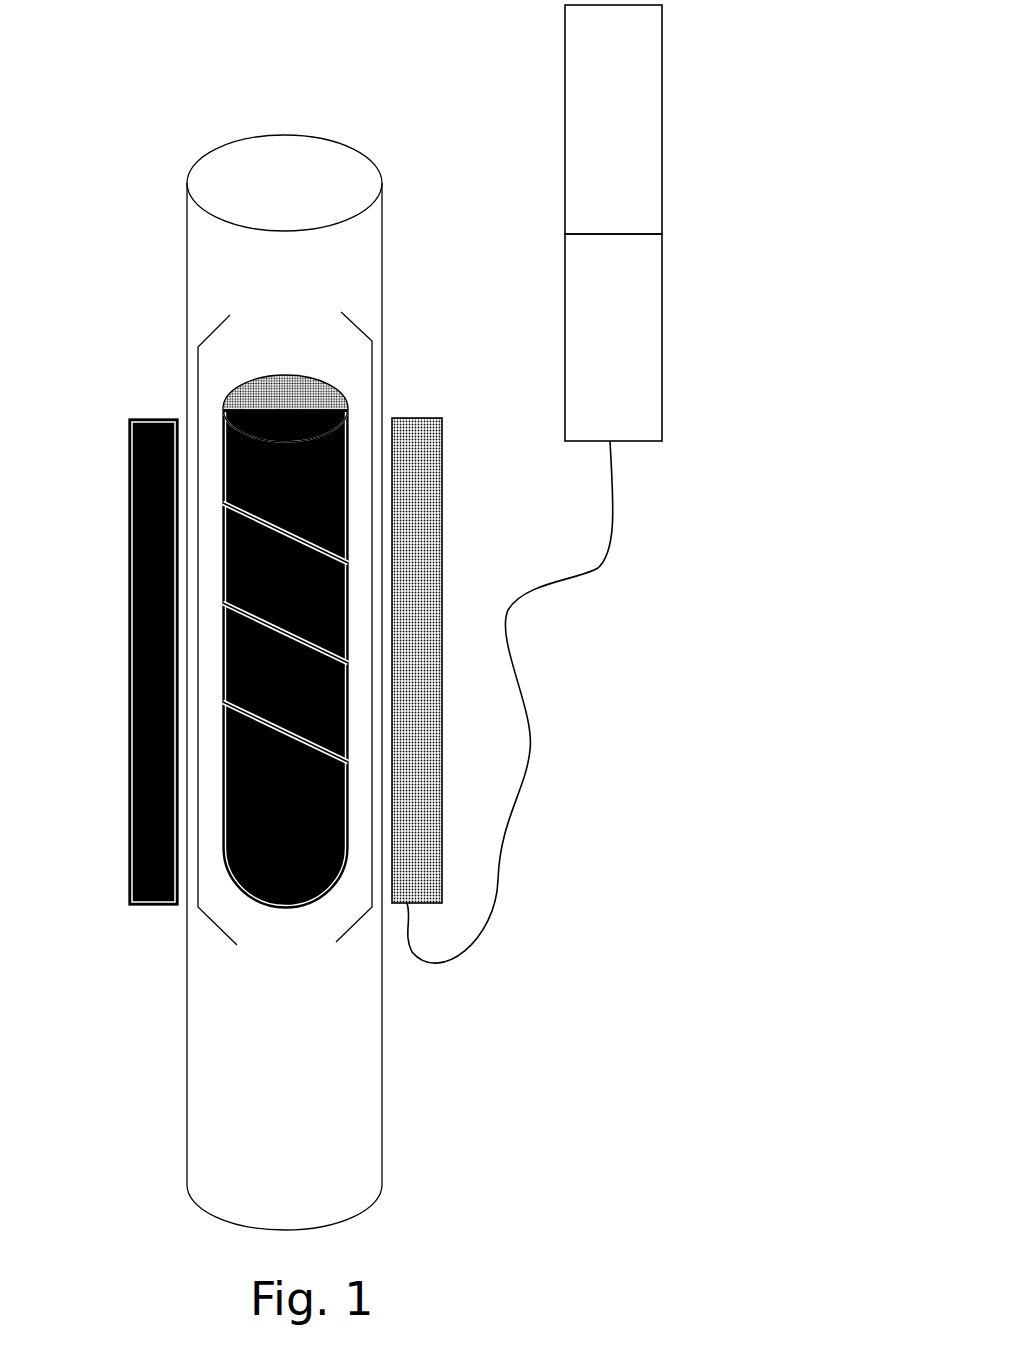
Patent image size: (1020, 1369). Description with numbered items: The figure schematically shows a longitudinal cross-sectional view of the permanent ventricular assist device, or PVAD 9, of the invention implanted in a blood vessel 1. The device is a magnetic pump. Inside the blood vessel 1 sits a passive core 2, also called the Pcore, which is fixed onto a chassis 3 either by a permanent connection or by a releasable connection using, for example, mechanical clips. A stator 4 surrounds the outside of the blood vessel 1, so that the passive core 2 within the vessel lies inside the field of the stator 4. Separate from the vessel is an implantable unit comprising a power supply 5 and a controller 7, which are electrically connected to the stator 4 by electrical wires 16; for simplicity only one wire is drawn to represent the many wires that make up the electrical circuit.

The blood vessel 1 is at (383, 280).
The passive core 2 is at (346, 400).
The chassis 3 is at (353, 927).
The stator 4 is at (443, 462).
The power supply 5 is at (663, 336).
The controller 7 is at (663, 120).
The permanent ventricular assist device 9 is at (152, 207).
The electrical wires 16 is at (573, 575).